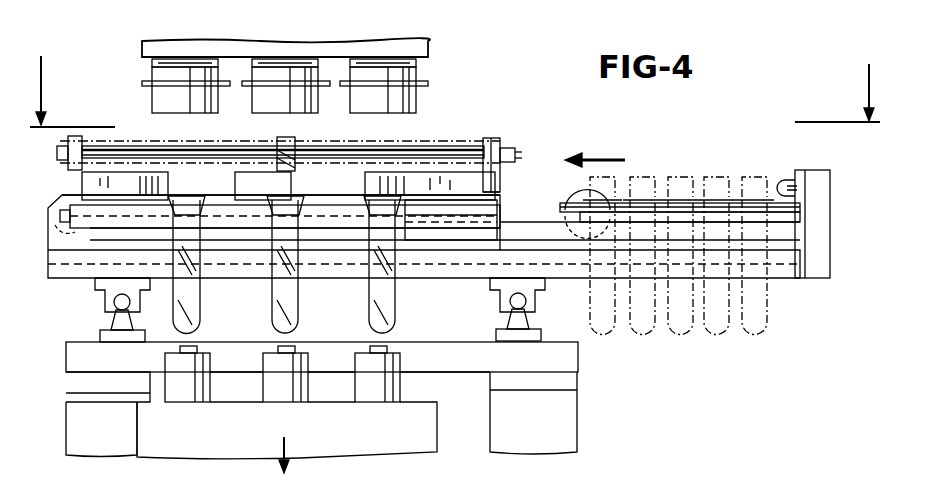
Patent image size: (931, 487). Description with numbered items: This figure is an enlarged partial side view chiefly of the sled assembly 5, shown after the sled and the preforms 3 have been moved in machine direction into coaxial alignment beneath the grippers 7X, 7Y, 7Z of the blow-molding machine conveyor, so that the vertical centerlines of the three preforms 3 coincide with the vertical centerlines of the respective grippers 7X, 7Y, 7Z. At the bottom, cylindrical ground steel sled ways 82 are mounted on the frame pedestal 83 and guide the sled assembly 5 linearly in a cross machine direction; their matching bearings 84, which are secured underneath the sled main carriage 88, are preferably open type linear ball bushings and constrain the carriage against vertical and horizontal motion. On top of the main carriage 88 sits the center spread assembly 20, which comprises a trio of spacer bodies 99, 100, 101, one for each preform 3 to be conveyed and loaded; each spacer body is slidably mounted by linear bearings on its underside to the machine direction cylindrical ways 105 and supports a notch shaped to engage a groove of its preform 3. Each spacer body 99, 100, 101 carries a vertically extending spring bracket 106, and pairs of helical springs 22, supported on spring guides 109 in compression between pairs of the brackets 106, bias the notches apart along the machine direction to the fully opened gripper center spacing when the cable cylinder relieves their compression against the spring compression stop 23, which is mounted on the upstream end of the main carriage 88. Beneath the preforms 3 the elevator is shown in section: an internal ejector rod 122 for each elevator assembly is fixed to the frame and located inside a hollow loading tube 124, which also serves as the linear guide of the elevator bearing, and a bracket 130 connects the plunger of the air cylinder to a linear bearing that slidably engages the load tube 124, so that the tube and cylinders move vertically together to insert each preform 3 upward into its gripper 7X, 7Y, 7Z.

The sled assembly 5 is at (455, 75).
The gripper 7X is at (172, 95).
The gripper 7Y is at (266, 95).
The gripper 7Z is at (368, 95).
The helical spring 22 is at (130, 140).
The spring guide 109 is at (212, 152).
The spring bracket 106 is at (77, 140).
The center spread assembly 20 is at (498, 128).
The sled main carriage 88 is at (48, 266).
The spacer body 99 is at (95, 192).
The spacer body 100 is at (322, 185).
The spacer body 101 is at (485, 190).
The machine direction cylindrical way 105 is at (656, 218).
The spring compression stop 23 is at (806, 178).
The preform 3 is at (200, 310).
The bearing 84 is at (105, 295).
The sled way 82 is at (102, 330).
The internal ejector rod 122 is at (378, 350).
The frame pedestal 83 is at (112, 441).
The bracket 130 is at (228, 441).
The loading tube 124 is at (370, 380).